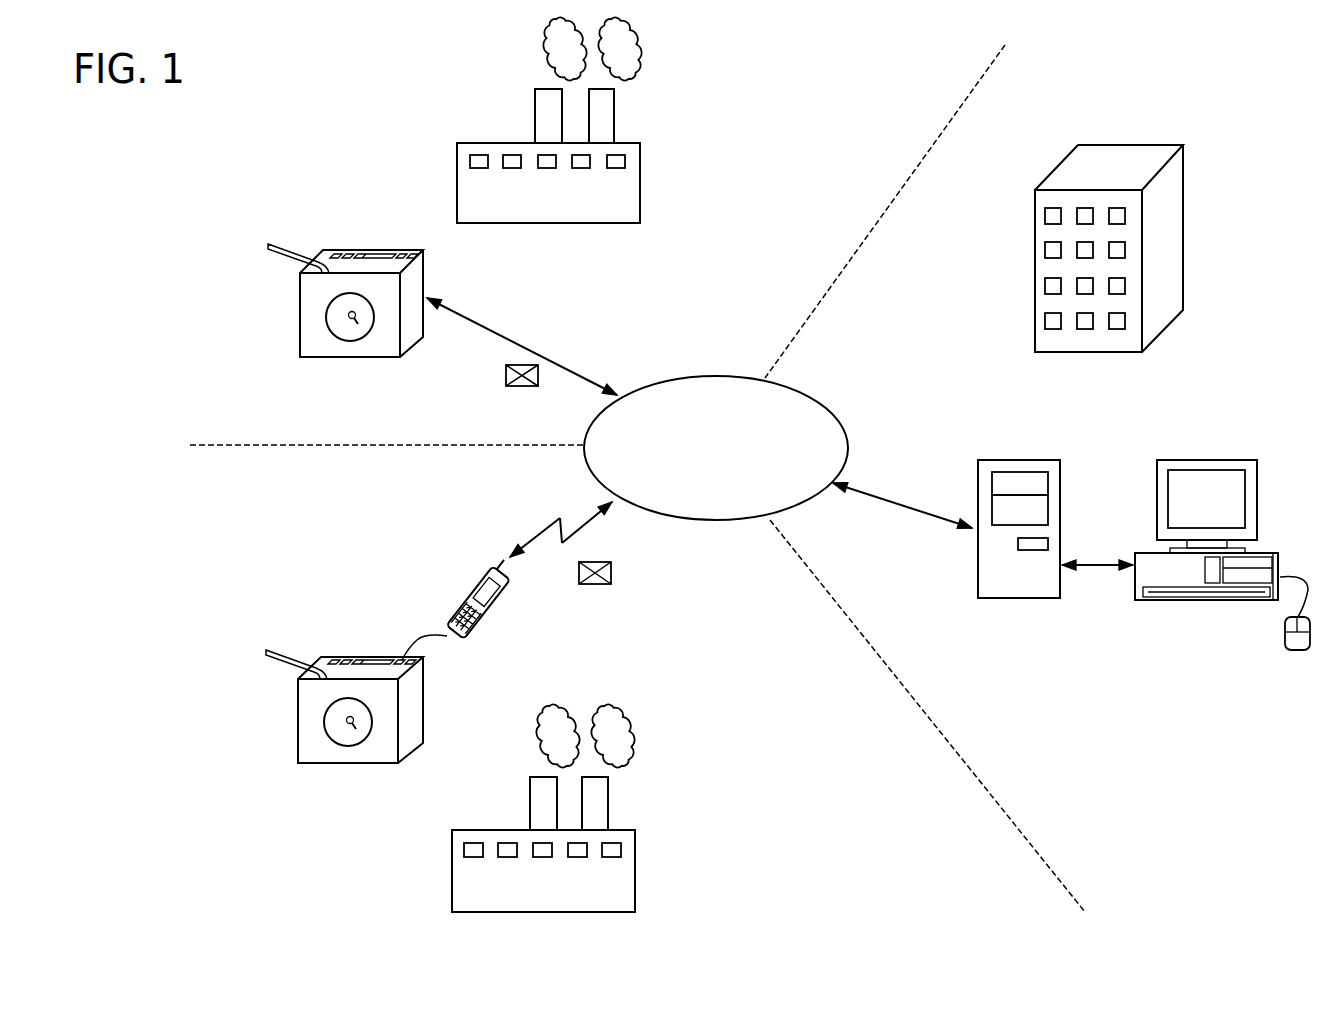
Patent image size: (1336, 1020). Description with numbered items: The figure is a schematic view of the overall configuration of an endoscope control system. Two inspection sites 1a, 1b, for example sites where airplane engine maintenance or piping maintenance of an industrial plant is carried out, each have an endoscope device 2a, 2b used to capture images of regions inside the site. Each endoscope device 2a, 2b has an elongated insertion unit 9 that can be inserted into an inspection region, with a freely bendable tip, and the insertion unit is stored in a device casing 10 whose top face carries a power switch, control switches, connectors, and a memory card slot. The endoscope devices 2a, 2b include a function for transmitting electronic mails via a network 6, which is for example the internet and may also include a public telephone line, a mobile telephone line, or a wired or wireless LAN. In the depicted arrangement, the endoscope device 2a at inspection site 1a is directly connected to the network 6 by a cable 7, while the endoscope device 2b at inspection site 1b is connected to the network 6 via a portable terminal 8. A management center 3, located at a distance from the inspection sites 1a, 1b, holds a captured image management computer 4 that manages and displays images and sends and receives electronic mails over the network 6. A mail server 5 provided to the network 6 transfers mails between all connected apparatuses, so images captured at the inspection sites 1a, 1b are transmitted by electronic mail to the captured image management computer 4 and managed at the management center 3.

The inspection site 1a is at (272, 134).
The inspection site 1b is at (272, 531).
The endoscope device 2a is at (300, 322).
The endoscope device 2b is at (300, 718).
The management center 3 is at (862, 307).
The captured image management computer 4 is at (1205, 600).
The mail server 5 is at (1023, 600).
The network 6 is at (709, 377).
The cable 7 is at (524, 343).
The portable terminal 8 is at (485, 616).
The insertion unit 9 is at (304, 252).
The device casing 10 is at (387, 350).